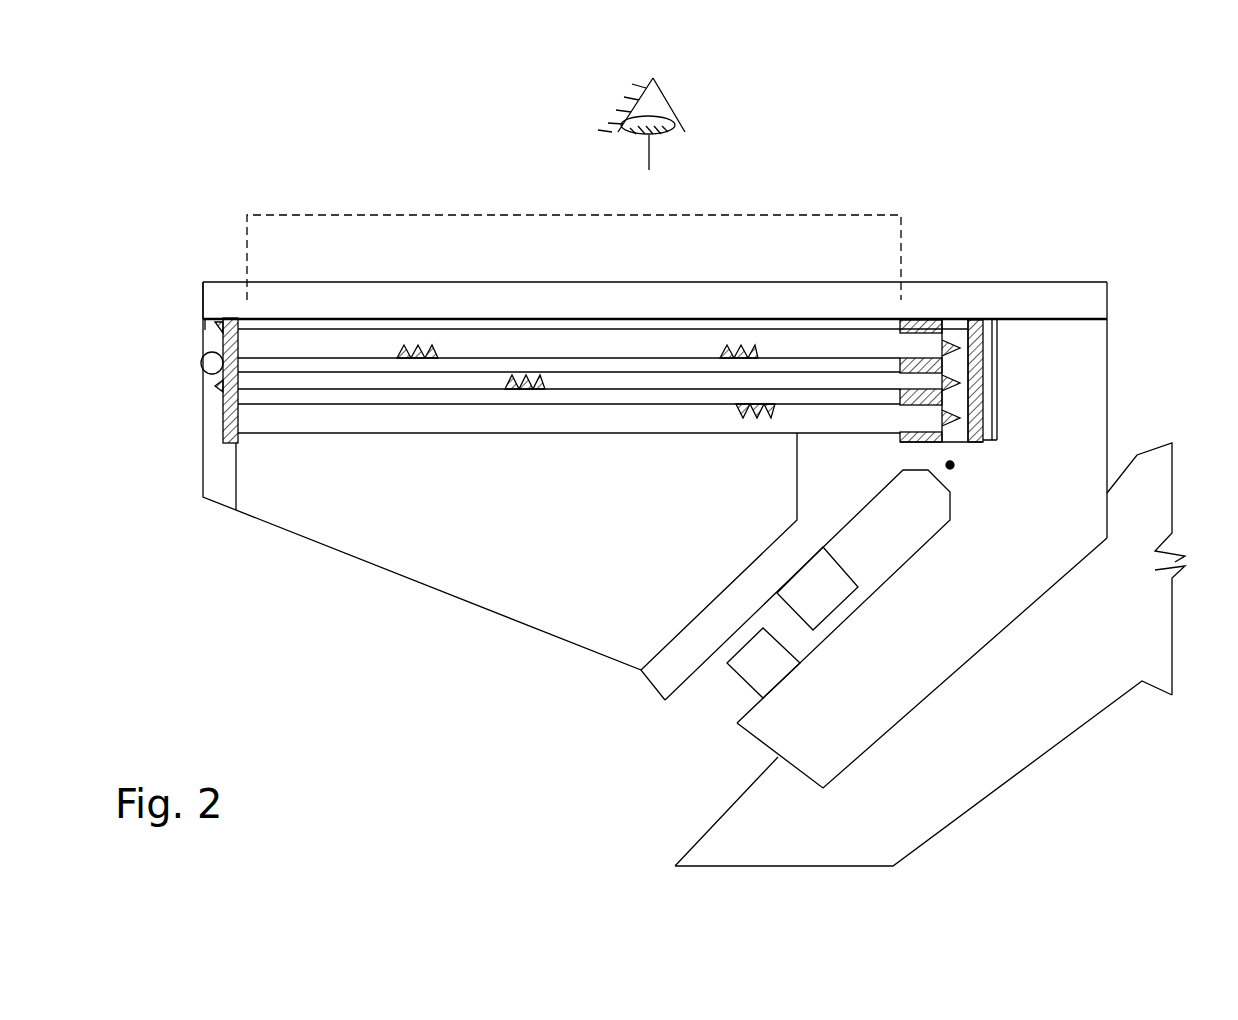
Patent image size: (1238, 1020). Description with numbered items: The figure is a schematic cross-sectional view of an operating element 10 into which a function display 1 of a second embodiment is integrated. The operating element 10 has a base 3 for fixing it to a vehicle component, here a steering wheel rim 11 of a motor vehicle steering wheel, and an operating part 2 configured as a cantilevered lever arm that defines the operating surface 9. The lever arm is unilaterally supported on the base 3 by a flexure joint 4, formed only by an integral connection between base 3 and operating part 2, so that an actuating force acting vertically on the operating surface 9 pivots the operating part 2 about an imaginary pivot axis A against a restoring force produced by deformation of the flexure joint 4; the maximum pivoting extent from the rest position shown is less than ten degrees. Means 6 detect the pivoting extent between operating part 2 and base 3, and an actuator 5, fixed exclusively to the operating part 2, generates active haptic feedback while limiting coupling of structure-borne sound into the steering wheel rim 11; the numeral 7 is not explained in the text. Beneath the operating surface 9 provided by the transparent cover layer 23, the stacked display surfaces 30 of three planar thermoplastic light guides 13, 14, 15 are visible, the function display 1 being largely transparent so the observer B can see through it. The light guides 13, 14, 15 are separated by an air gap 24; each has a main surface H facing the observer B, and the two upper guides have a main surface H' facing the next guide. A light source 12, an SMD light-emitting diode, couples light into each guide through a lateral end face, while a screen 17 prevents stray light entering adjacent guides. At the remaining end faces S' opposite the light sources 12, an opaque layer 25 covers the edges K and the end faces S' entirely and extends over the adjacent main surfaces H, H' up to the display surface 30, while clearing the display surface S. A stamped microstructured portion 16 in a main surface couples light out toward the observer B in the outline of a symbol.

The function display 1 is at (857, 274).
The operating part 2 is at (225, 281).
The base 3 is at (948, 650).
The flexure joint 4 is at (970, 483).
The actuator 5 is at (830, 597).
The means for detecting a pivoting extent 6 is at (766, 670).
The cap / tip 7 is at (917, 538).
The operating surface 9 is at (475, 281).
The operating element 10 is at (374, 604).
The steering wheel rim 11 is at (905, 764).
The light source 12 is at (983, 345).
The light guide 13 is at (318, 340).
The light guide 14 is at (376, 372).
The light guide 15 is at (380, 434).
The microstructured portion 16 is at (726, 355).
The screen 17 is at (955, 330).
The transparent cover layer 23 is at (1088, 300).
The air gap 24 is at (618, 324).
The opaque layer 25 is at (237, 445).
The display surface 30 is at (574, 239).
The observer B is at (644, 122).
The main surface H is at (795, 311).
The main surface H' is at (828, 424).
The edge K is at (225, 378).
The display surface S is at (1069, 378).
The remaining end face S' is at (174, 352).
The imaginary pivot axis A is at (952, 464).